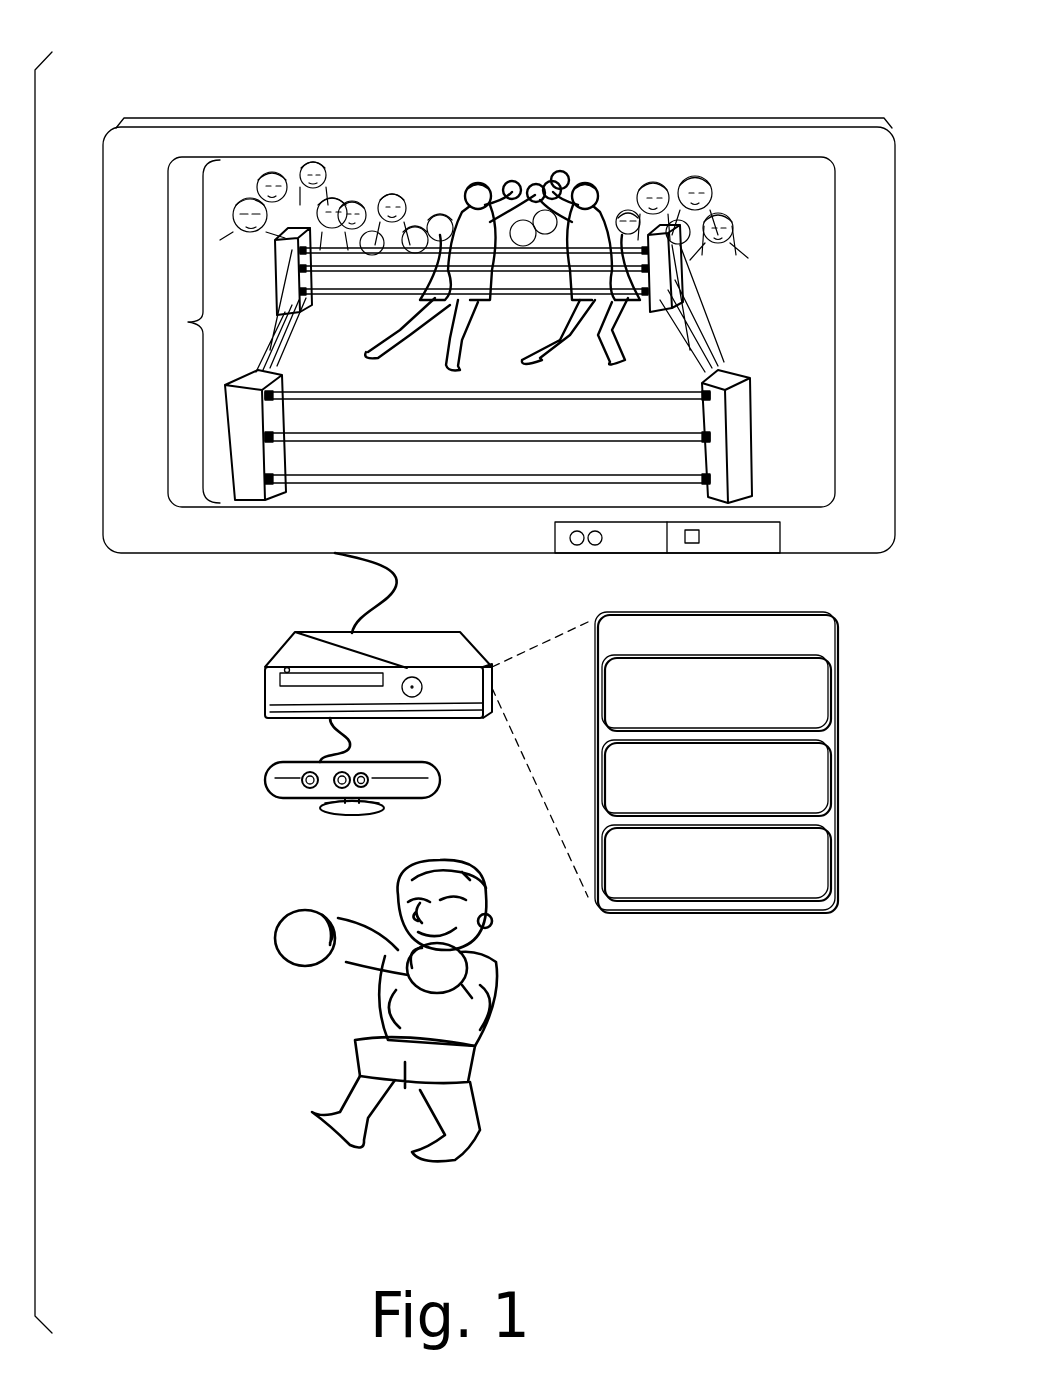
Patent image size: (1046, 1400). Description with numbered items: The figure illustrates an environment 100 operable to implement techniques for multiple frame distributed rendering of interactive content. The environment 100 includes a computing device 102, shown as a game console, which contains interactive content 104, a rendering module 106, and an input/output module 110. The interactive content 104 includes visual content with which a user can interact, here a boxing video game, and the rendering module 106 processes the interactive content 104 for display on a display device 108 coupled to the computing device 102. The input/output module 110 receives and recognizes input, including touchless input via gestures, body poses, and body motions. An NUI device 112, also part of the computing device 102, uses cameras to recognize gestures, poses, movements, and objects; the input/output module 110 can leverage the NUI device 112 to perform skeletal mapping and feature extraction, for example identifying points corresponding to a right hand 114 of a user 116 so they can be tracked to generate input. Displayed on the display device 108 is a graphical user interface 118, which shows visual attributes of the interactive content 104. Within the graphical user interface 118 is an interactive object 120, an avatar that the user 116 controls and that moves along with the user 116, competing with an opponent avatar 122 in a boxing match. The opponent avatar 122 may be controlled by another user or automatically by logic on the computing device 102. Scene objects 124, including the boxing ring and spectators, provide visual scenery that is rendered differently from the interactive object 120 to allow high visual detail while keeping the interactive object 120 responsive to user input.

The environment 100 is at (166, 70).
The computing device 102 is at (551, 762).
The interactive content 104 is at (716, 693).
The rendering module 106 is at (716, 778).
The display device 108 is at (122, 132).
The input/output module 110 is at (716, 863).
The NUI device 112 is at (276, 762).
The right hand 114 is at (290, 915).
The user 116 is at (438, 999).
The graphical user interface 118 is at (475, 332).
The interactive object 120 is at (600, 186).
The opponent avatar 122 is at (478, 182).
The scene objects 124 is at (188, 322).